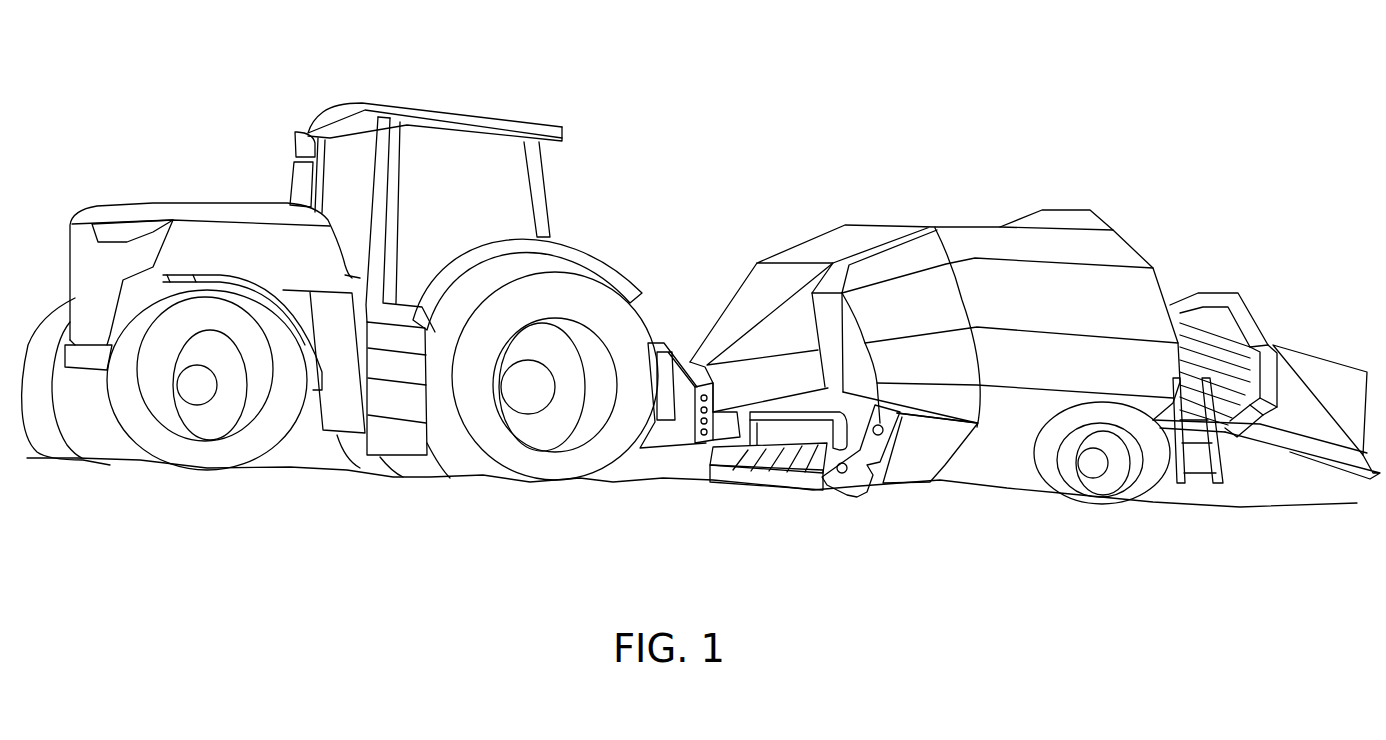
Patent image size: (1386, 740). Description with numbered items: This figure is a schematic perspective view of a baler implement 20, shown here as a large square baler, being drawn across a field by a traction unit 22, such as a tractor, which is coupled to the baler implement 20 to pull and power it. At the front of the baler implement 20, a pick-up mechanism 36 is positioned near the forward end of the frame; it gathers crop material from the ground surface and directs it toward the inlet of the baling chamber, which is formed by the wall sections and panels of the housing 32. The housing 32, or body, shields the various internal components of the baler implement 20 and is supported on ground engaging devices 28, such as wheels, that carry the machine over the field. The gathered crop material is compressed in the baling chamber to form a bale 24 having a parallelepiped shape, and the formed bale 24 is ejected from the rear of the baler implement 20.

The baler implement 20 is at (795, 127).
The traction unit 22 is at (497, 118).
The bale 24 is at (1333, 380).
The ground engaging devices 28 is at (1150, 487).
The housing 32 is at (1060, 255).
The pick-up mechanism 36 is at (792, 483).